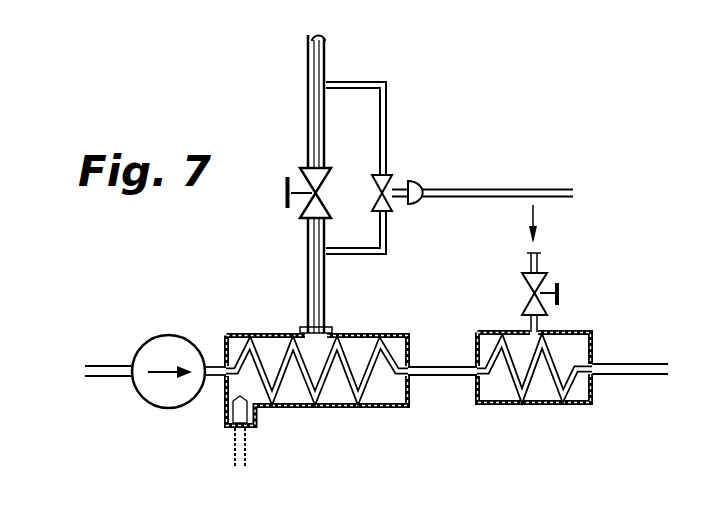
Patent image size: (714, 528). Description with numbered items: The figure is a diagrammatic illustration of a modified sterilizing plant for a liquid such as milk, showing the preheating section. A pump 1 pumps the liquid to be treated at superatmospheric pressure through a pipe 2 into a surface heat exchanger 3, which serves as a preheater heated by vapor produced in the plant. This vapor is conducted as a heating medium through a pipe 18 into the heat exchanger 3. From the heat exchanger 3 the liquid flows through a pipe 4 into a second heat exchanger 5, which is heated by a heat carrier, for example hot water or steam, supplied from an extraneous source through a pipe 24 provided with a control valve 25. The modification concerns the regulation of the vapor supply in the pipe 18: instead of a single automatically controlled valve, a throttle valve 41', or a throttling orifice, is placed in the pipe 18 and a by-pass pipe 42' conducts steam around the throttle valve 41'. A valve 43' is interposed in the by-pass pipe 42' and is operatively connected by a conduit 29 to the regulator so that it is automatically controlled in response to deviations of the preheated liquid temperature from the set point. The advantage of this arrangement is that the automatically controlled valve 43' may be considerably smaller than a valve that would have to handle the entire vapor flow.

The pump 1 is at (152, 347).
The pipe 2 is at (217, 380).
The surface heat exchanger 3 is at (252, 333).
The pipe 4 is at (440, 375).
The heat exchanger 5 is at (543, 405).
The pipe 18 is at (313, 113).
The pipe 24 is at (537, 262).
The control valve 25 is at (560, 293).
The conduit 29 is at (505, 192).
The throttle valve 41' is at (289, 211).
The by-pass pipe 42' is at (391, 163).
The valve 43' is at (412, 213).